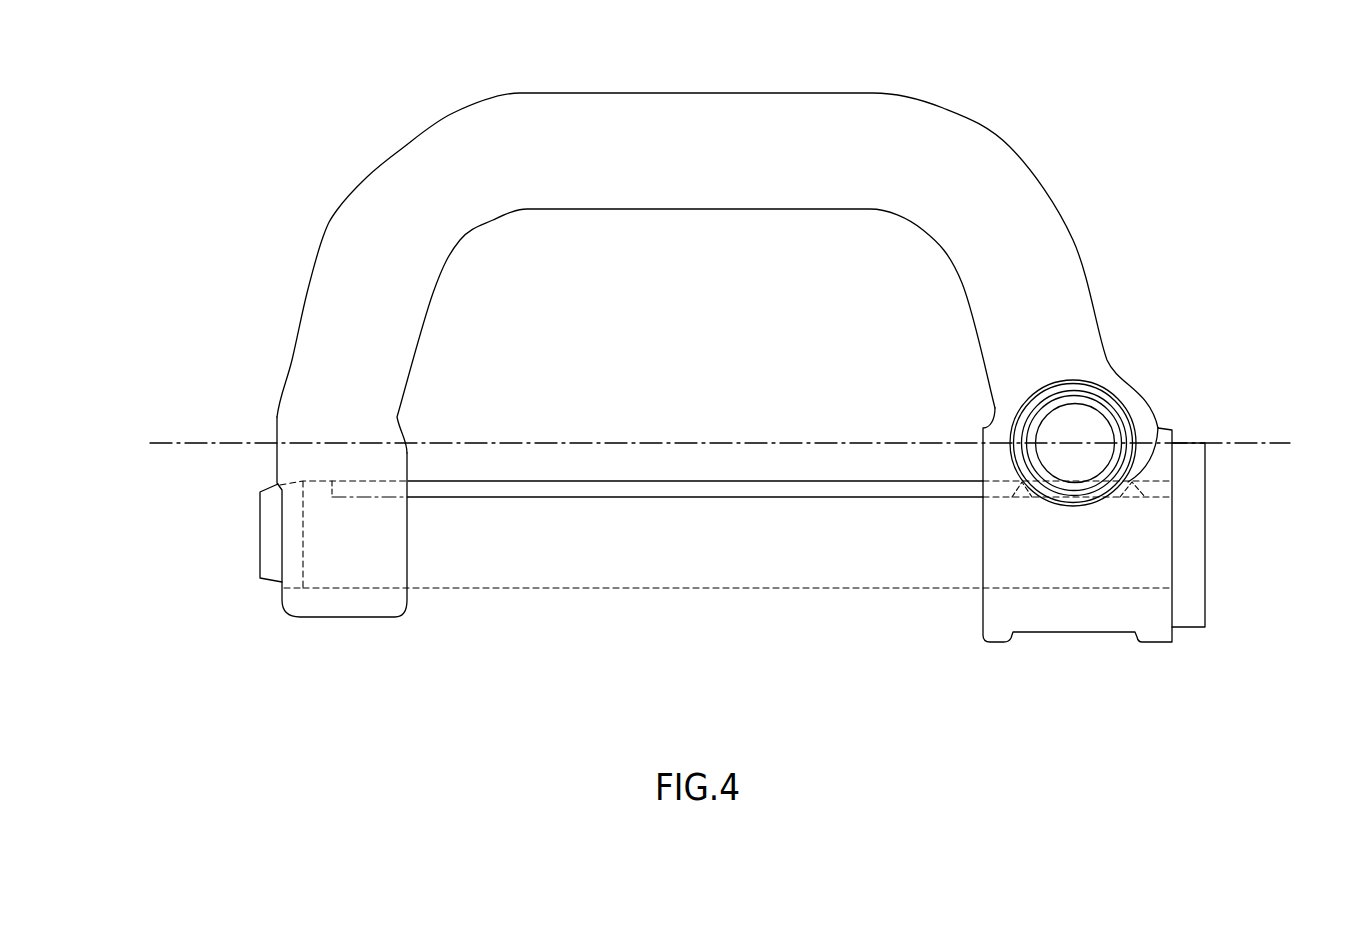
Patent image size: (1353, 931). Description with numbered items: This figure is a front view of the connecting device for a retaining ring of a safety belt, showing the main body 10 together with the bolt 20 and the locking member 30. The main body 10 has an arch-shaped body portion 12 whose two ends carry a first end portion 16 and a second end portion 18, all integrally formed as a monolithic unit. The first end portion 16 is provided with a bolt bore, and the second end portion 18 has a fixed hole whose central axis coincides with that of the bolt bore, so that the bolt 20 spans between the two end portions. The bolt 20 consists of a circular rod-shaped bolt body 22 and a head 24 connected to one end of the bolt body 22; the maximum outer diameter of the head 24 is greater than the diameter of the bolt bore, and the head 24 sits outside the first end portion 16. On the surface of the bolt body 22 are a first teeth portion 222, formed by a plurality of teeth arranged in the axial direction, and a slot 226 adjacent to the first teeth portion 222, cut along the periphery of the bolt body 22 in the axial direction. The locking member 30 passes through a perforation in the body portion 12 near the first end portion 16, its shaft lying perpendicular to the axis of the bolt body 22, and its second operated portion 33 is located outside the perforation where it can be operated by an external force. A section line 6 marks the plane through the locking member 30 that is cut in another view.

The section line 6- 6 is at (1255, 440).
The main body 10 is at (725, 404).
The body portion 12 is at (337, 210).
The first end portion 16 is at (1108, 632).
The second end portion 18 is at (312, 618).
The bolt 20 is at (662, 588).
The bolt body 22 is at (805, 588).
The head 24 is at (1205, 562).
The locking member 30 is at (1073, 474).
The second operated portion 33 is at (1078, 455).
The first teeth portion 222 is at (1158, 428).
The slot 226 is at (505, 497).